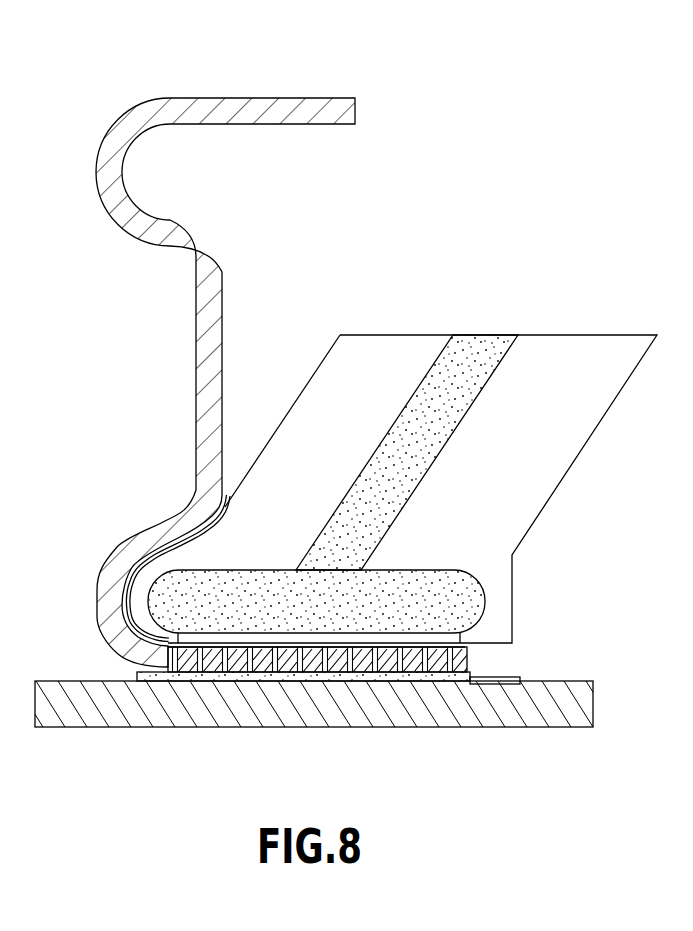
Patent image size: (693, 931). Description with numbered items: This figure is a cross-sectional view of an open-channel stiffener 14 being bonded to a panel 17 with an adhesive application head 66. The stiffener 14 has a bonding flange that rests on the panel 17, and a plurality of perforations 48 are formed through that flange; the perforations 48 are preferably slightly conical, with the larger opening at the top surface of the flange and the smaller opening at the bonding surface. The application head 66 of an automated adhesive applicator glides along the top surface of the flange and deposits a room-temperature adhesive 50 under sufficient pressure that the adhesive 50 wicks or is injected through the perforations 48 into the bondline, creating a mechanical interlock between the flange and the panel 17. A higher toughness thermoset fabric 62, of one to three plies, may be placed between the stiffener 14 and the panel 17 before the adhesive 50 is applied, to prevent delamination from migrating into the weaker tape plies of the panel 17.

The open-channel stiffener 14 is at (208, 245).
The adhesive mixing and application head 66 is at (565, 428).
The adhesive 50 is at (472, 673).
The perforations 48 is at (187, 657).
The higher toughness thermoset fabric 62 is at (450, 683).
The panel 17 is at (578, 698).